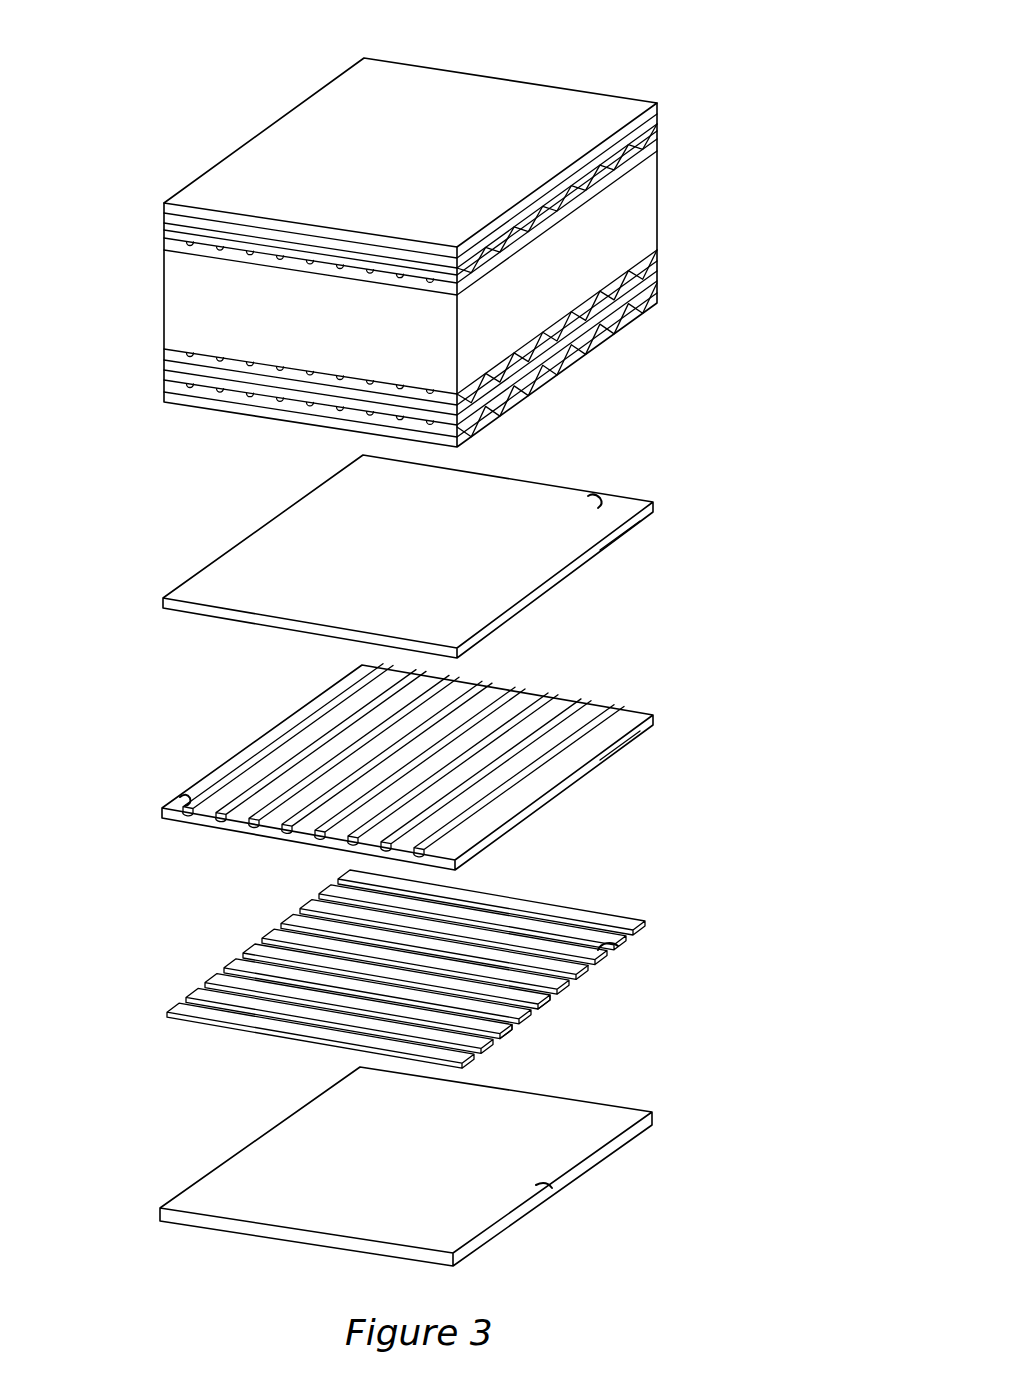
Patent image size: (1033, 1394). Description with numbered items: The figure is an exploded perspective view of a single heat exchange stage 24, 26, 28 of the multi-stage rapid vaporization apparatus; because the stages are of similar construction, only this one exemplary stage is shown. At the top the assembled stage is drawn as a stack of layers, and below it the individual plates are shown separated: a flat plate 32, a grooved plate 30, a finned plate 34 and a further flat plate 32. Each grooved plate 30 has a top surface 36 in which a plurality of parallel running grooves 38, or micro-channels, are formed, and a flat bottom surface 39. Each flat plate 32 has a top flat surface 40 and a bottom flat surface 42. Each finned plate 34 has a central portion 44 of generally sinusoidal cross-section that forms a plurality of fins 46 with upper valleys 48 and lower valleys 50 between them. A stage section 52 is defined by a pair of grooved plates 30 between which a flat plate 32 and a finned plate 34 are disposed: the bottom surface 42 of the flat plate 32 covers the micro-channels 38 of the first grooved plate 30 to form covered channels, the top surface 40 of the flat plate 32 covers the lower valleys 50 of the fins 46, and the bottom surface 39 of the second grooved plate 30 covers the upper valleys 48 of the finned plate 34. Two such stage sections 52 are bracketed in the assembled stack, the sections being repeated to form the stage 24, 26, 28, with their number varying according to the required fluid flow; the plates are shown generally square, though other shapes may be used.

The heat exchange stage 24 is at (471, 230).
The heat exchange stage 26 is at (471, 230).
The heat exchange stage 28 is at (583, 80).
The grooved plate 30 is at (164, 352).
The flat plate 32 is at (164, 375).
The finned plate 34 is at (164, 363).
The top surface 36 is at (183, 800).
The grooves 38 is at (218, 812).
The flat bottom surface 39 is at (640, 745).
The top flat surface 40 is at (593, 500).
The bottom flat surface 42 is at (640, 530).
The central portion 44 is at (557, 994).
The fins 46 is at (522, 1024).
The upper valleys 48 is at (618, 948).
The lower valleys 50 is at (595, 330).
The stage section 52 is at (672, 102).